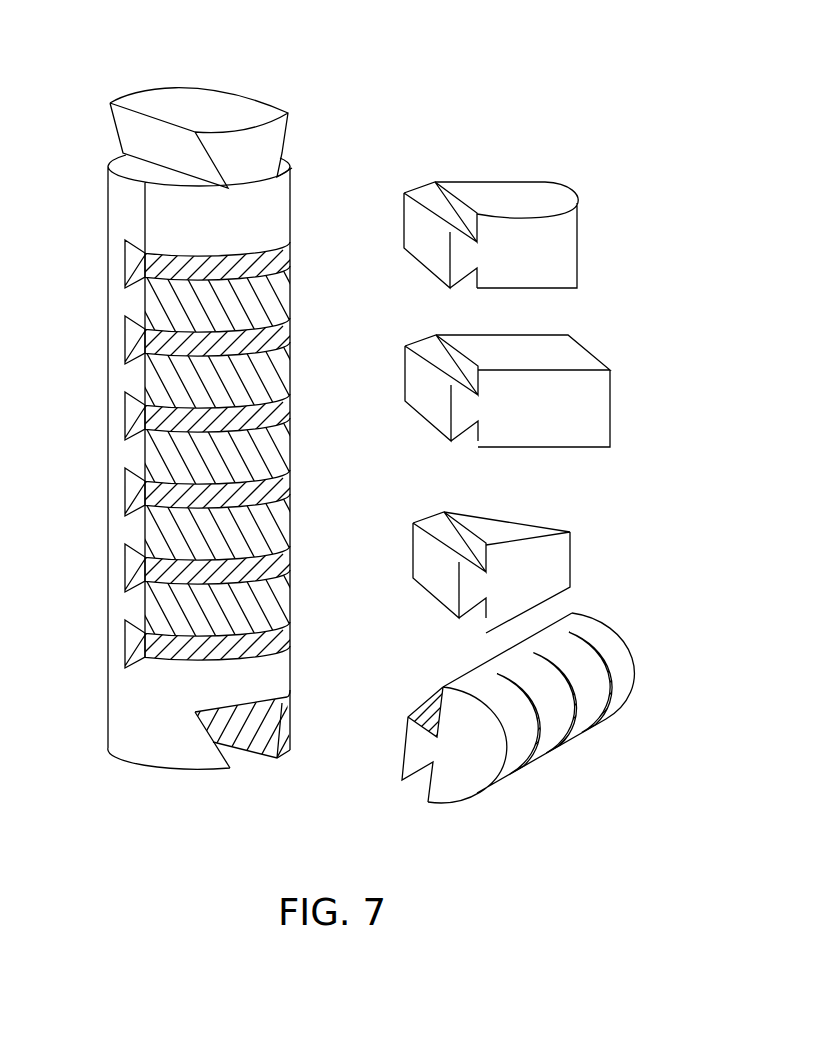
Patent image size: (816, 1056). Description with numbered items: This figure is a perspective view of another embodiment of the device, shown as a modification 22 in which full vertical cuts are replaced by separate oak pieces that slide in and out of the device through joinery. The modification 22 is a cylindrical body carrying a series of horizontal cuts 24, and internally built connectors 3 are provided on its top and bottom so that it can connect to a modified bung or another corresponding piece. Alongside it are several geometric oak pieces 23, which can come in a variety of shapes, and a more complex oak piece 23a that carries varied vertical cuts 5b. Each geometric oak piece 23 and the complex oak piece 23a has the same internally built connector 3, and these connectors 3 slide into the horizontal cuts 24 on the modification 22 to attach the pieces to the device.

The internally built connector 3 is at (248, 95).
The modification 22 is at (292, 195).
The horizontal cut 24 is at (125, 266).
The geometric oak piece 23 is at (580, 244).
The complex oak piece 23a is at (627, 651).
The varied vertical cut 5b is at (544, 762).